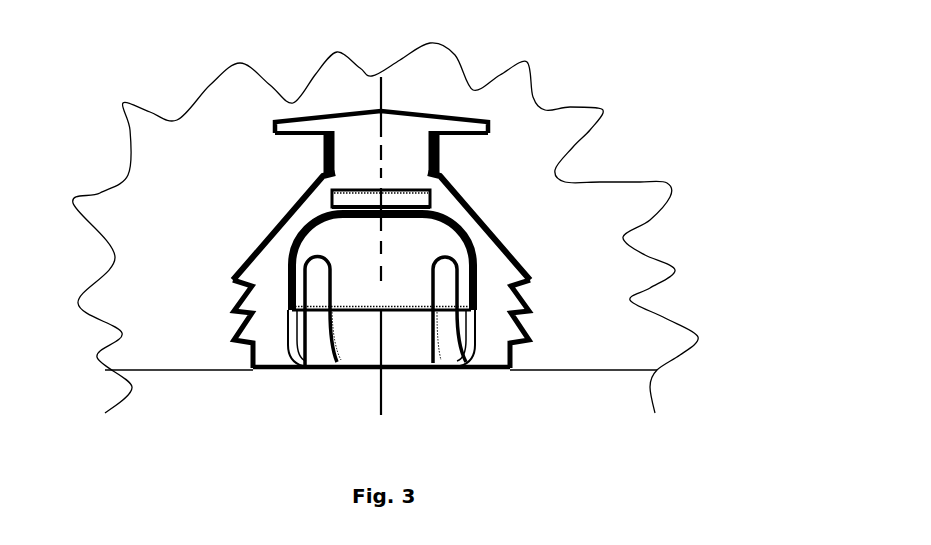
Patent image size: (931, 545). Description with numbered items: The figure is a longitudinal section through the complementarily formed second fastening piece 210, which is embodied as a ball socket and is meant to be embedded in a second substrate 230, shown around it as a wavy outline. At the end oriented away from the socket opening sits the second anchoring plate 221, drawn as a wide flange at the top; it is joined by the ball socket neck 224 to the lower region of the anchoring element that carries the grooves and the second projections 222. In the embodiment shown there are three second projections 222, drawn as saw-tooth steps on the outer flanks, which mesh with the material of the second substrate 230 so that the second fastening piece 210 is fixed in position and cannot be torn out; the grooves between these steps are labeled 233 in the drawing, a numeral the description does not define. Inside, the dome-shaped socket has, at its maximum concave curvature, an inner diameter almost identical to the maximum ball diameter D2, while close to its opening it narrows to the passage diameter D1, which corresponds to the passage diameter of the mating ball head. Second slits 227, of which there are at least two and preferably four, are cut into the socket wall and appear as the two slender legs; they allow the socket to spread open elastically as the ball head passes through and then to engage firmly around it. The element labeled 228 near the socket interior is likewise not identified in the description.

The second fastening piece 210 is at (434, 258).
The second anchoring plate 221 is at (450, 120).
The second projections 222 is at (530, 313).
The ball socket neck 224 is at (323, 167).
The second slits 227 is at (438, 337).
The inner dome chamber 228 is at (365, 290).
The second substrate 230 is at (528, 195).
The left retention ribs 233 is at (240, 285).
The passage diameter D1 is at (303, 208).
The maximum ball diameter D2 is at (296, 268).